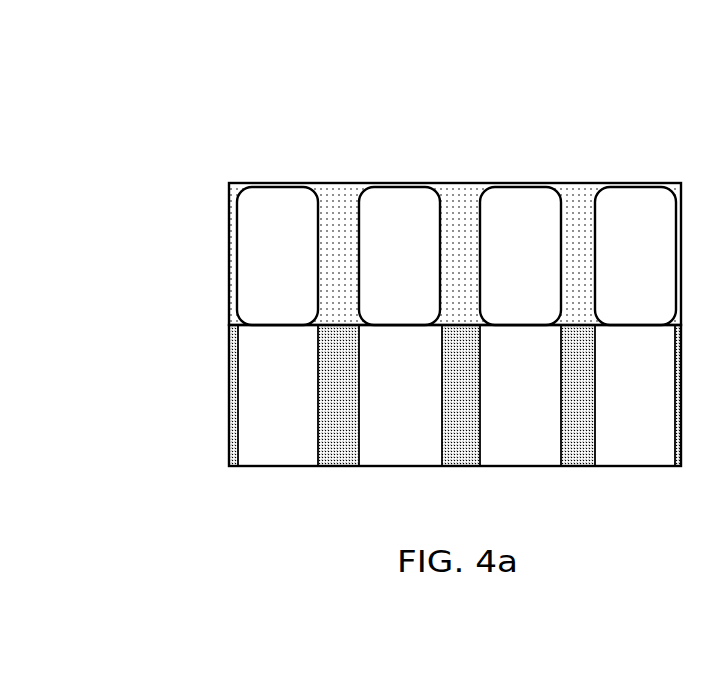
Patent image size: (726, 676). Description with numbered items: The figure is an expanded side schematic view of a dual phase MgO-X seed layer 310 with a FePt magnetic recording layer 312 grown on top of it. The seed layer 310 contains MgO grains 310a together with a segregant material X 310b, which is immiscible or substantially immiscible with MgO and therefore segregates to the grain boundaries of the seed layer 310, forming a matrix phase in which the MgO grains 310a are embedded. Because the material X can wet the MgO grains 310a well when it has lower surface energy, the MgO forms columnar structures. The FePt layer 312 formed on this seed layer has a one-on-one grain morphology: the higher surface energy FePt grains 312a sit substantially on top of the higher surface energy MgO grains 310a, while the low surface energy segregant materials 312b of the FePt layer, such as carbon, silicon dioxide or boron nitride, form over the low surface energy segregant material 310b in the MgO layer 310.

The FePt magnetic recording layer 312 is at (222, 185).
The FePt grains 312a is at (425, 280).
The segregant materials 312b is at (338, 197).
The dual phase MgO-X seed layer 310 is at (222, 327).
The MgO grains 310a is at (425, 421).
The segregant material X 310b is at (330, 456).